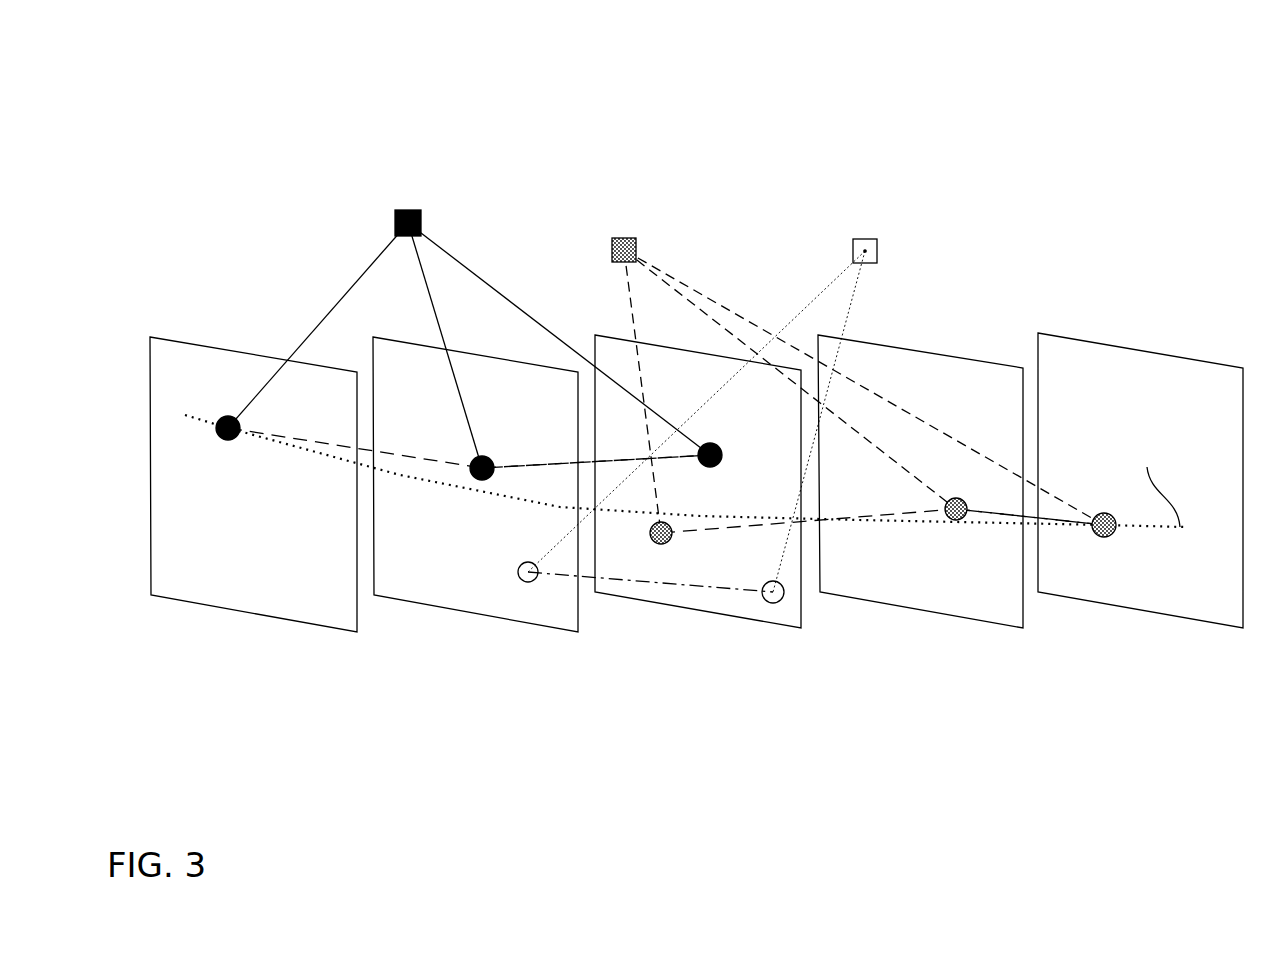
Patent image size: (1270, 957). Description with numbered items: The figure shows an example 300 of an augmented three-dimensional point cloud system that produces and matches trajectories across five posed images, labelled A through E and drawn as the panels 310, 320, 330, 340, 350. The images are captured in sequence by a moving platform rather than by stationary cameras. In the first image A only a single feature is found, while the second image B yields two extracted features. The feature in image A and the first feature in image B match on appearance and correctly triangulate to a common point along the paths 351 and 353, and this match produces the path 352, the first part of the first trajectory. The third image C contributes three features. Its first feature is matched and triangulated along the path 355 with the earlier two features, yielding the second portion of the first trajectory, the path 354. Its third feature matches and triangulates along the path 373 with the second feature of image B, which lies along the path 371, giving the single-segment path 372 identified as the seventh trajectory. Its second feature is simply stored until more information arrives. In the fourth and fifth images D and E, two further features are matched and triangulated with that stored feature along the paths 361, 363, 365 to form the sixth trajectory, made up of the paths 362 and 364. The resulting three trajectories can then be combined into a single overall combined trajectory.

The example 300 is at (88, 54).
The image A 310 is at (207, 603).
The image B 320 is at (413, 603).
The image C 330 is at (750, 622).
The image D 340 is at (905, 607).
The image E 350 is at (1098, 605).
The path 351 is at (363, 272).
The path 352 is at (335, 445).
The path 353 is at (437, 327).
The path 354 is at (508, 462).
The path 355 is at (490, 290).
The path 361 is at (628, 312).
The path 362 is at (908, 513).
The path 363 is at (728, 338).
The path 364 is at (1017, 518).
The path 365 is at (862, 390).
The path 371 is at (720, 397).
The path 372 is at (700, 585).
The path 373 is at (812, 460).